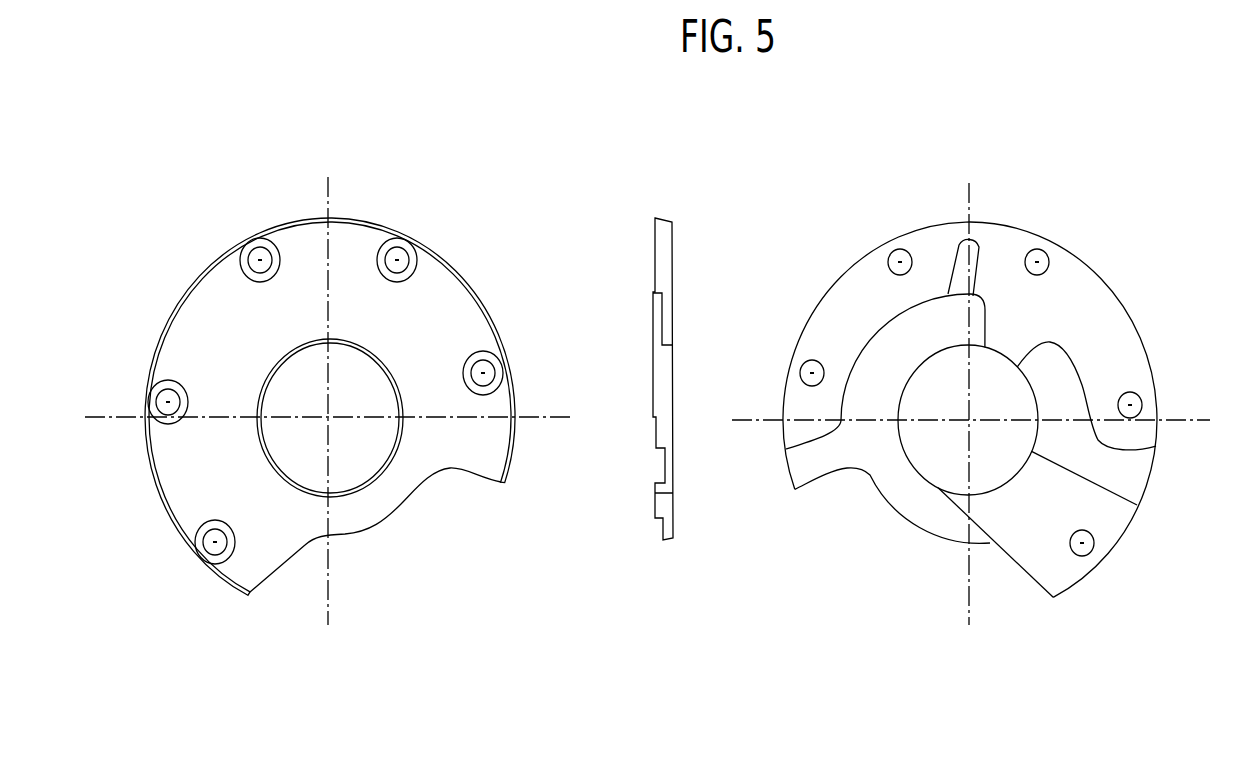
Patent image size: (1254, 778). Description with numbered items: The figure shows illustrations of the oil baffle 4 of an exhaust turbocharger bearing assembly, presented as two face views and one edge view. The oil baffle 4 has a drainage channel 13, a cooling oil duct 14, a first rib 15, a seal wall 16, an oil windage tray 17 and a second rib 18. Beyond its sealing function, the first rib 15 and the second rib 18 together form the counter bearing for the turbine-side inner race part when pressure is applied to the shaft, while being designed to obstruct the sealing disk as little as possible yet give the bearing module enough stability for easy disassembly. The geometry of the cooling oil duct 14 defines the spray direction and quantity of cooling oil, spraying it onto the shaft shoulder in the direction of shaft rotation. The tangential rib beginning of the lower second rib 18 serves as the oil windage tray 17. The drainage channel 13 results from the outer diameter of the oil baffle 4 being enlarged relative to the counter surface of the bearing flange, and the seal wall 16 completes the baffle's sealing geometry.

The oil baffle 4 is at (973, 373).
The drainage channel 13 is at (672, 221).
The cooling oil duct 14 is at (977, 251).
The first rib 15 is at (1006, 340).
The seal wall 16 is at (1058, 377).
The oil windage tray 17 is at (958, 513).
The second rib 18 is at (1047, 563).